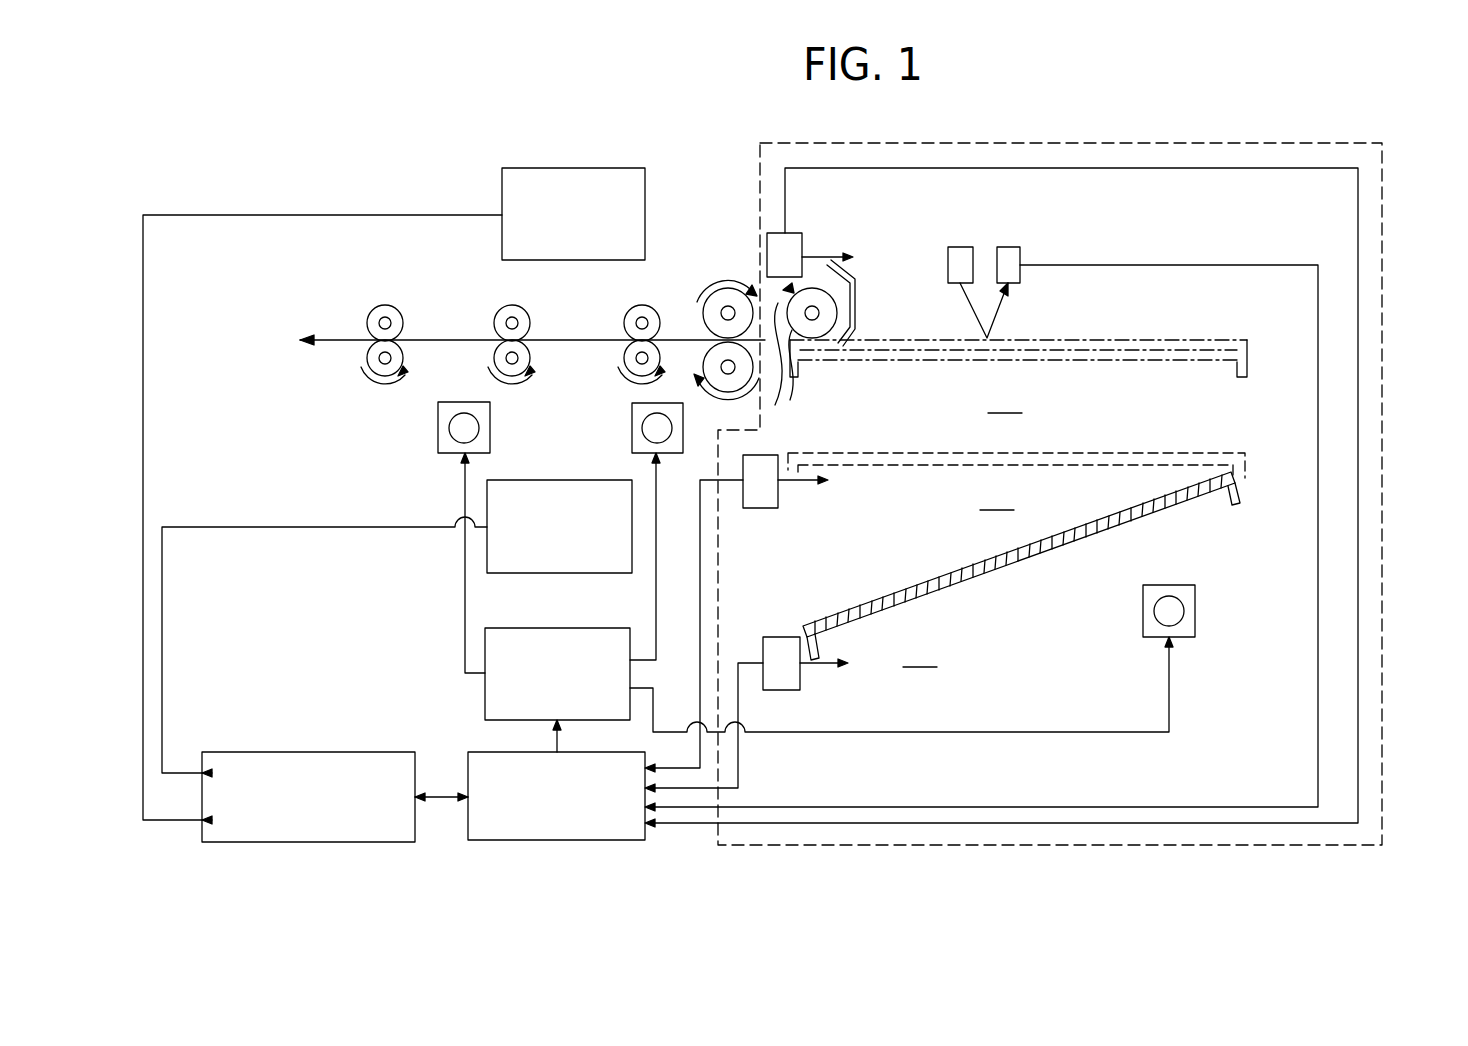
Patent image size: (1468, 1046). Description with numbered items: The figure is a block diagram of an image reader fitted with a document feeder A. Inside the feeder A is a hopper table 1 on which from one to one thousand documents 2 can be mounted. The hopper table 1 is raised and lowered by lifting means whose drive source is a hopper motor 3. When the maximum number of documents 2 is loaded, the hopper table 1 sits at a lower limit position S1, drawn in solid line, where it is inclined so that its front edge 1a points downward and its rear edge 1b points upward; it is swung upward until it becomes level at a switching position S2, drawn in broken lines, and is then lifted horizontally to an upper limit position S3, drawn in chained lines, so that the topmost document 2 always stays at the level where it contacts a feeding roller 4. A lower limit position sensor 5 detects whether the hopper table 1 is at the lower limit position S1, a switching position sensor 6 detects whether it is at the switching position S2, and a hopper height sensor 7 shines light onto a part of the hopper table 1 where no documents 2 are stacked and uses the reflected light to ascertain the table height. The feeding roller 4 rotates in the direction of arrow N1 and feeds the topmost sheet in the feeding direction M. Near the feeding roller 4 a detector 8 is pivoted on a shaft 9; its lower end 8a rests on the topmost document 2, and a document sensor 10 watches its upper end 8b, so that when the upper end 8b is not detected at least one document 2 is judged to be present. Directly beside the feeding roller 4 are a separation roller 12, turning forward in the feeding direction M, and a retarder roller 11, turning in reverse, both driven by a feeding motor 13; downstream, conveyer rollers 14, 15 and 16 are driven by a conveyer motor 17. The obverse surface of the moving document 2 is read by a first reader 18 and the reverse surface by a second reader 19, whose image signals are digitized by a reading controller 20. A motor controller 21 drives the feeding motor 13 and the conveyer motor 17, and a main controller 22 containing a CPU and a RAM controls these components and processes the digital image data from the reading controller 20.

The hopper table 1 is at (1125, 365).
The front edge 1a is at (822, 660).
The rear edge 1b is at (1240, 504).
The documents 2 is at (1150, 338).
The hopper motor 3 is at (1195, 612).
The feeding roller 4 is at (822, 308).
The lower limit position sensor 5 is at (782, 637).
The switching position sensor 6 is at (778, 505).
The hopper height sensor 7 is at (1012, 247).
The detector 8 is at (862, 312).
The lower end 8a is at (845, 346).
The upper end 8b is at (828, 264).
The shaft 9 is at (852, 282).
The document sensor 10 is at (770, 238).
The retarder roller 11 is at (705, 342).
The separation roller 12 is at (728, 288).
The feeding motor 13 is at (632, 428).
The conveyer roller 14 is at (625, 316).
The conveyer roller 15 is at (495, 318).
The conveyer roller 16 is at (368, 318).
The conveyer motor 17 is at (438, 428).
The first reader 18 is at (560, 168).
The second reader 19 is at (545, 480).
The reading controller 20 is at (330, 842).
The motor controller 21 is at (590, 628).
The main controller 22 is at (580, 840).
The document feeder A is at (1383, 445).
The rotation direction of feeding roller N1 is at (792, 357).
The feeding direction M is at (318, 377).
The lower limit position S1 is at (921, 652).
The switching position S2 is at (998, 495).
The upper limit position S3 is at (1006, 398).